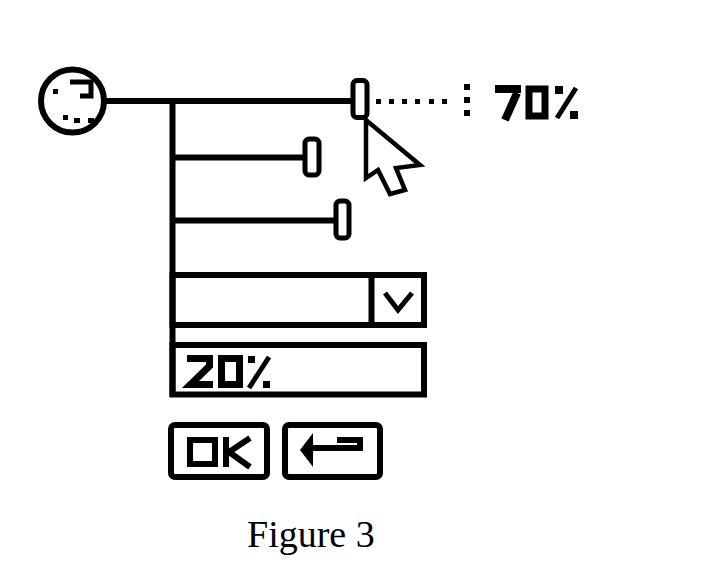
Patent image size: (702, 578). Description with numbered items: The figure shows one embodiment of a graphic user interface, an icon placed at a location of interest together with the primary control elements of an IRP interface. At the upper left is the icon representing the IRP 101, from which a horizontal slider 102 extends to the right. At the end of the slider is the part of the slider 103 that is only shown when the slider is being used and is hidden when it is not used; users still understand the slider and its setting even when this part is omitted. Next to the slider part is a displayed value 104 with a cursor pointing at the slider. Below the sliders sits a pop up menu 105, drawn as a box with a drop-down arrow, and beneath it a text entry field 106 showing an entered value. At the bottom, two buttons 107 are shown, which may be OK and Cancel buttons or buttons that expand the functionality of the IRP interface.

The icon representing the IRP 101 is at (72, 85).
The slider 102 is at (228, 83).
The part of the slider 103 is at (397, 92).
The value readout 104 is at (478, 123).
The pop up menu 105 is at (326, 305).
The text entry field 106 is at (326, 373).
The two buttons 107 is at (324, 451).